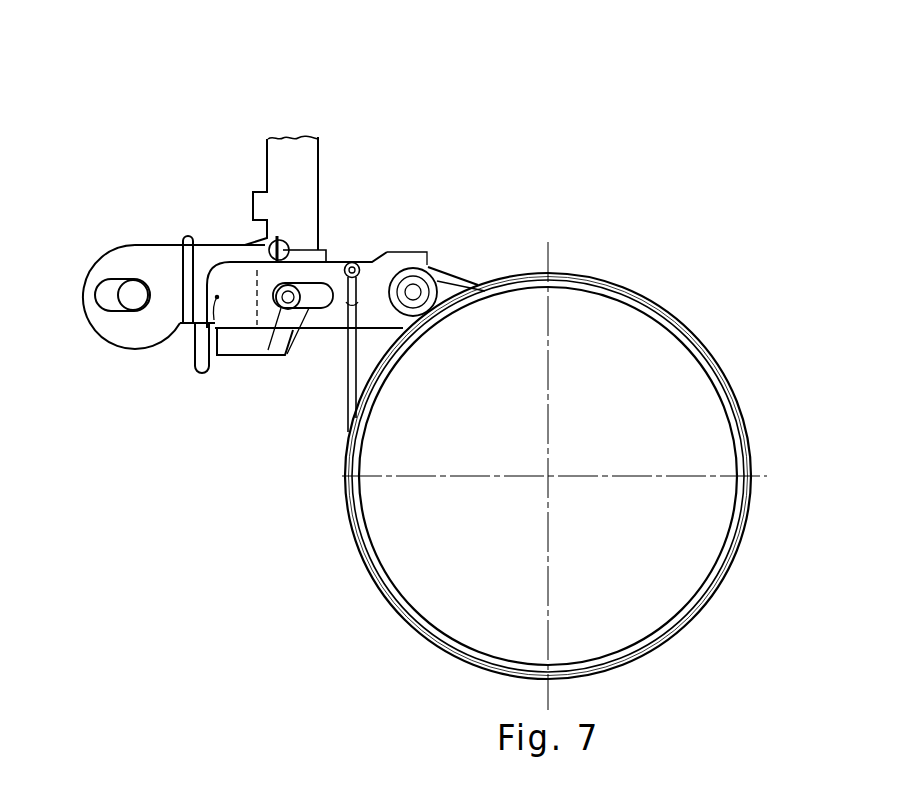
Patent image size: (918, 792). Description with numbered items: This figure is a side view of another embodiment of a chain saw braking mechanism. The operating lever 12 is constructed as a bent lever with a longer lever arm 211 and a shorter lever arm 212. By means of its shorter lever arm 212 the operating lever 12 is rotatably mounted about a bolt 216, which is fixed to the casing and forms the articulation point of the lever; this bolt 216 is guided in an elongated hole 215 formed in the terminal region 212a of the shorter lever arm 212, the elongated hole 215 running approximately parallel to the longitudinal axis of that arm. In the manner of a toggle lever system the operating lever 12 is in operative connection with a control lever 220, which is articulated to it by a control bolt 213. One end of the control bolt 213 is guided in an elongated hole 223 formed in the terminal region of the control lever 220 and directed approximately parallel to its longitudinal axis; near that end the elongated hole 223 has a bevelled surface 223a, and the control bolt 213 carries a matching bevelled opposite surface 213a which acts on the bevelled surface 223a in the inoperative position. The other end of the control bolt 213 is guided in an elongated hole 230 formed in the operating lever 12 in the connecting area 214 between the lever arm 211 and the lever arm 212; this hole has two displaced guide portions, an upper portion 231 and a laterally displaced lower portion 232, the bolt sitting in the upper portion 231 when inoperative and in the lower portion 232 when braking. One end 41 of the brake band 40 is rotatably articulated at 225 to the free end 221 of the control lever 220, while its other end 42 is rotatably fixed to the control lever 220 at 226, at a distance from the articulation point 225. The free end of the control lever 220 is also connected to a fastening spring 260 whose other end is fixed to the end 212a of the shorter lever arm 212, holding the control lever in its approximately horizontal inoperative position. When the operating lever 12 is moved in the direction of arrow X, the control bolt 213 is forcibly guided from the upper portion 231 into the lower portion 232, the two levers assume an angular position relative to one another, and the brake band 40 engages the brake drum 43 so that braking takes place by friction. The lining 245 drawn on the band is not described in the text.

The operating lever 12 is at (315, 137).
The longer lever arm 211 is at (272, 138).
The shorter lever arm 212 is at (162, 294).
The terminal region of lever arm 212a is at (110, 262).
The control bolt 213 is at (283, 335).
The bevelled opposite surface 213a is at (312, 268).
The connecting area 214 is at (304, 308).
The elongated hole 215 is at (108, 310).
The bolt 216 is at (133, 302).
The control lever 220 is at (331, 345).
The free end of control lever 221 is at (430, 266).
The elongated hole 223 is at (235, 332).
The bevelled surface 223a is at (268, 282).
The articulation point 225 is at (418, 292).
The fixing point 226 is at (388, 268).
The elongated hole 230 is at (275, 240).
The upper portion 231 is at (295, 246).
The lower portion 232 is at (274, 335).
The band lining 245 is at (548, 262).
The fastening spring 260 is at (196, 372).
The brake band 40 is at (522, 428).
The one end of brake band 41 is at (522, 272).
The other end of brake band 42 is at (345, 445).
The brake drum 43 is at (427, 595).
The arrow X is at (307, 155).